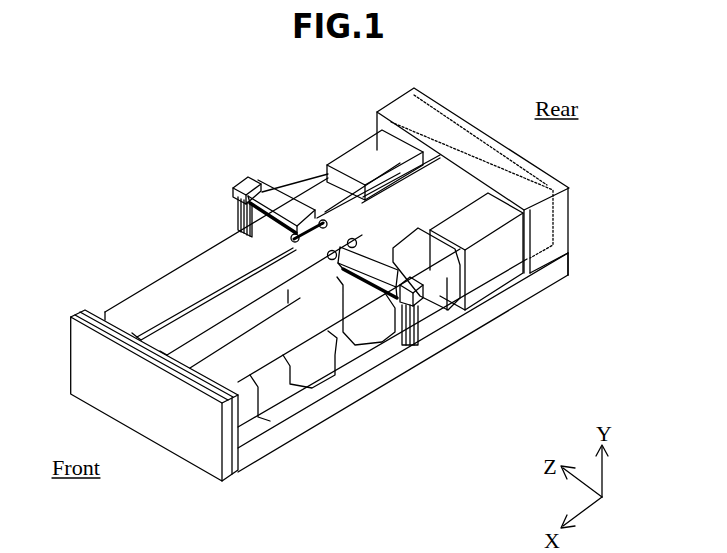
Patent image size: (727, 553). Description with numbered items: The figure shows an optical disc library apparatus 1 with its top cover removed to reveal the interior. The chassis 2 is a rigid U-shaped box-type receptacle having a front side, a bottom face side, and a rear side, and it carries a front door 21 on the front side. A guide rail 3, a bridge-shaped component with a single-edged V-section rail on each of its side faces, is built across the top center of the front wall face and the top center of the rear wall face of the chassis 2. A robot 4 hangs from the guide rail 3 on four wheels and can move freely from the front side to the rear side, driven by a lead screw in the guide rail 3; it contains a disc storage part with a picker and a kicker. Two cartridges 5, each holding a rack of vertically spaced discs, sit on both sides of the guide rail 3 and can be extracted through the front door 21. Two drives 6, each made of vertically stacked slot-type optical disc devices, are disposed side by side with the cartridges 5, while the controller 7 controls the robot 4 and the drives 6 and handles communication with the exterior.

The optical disc library apparatus 1 is at (143, 118).
The chassis 2 is at (280, 444).
The front door 21 is at (193, 457).
The guide rail 3 is at (195, 320).
The robot 4 is at (278, 200).
The cartridge 5 is at (235, 257).
The drive 6 is at (372, 160).
The controller 7 is at (542, 222).